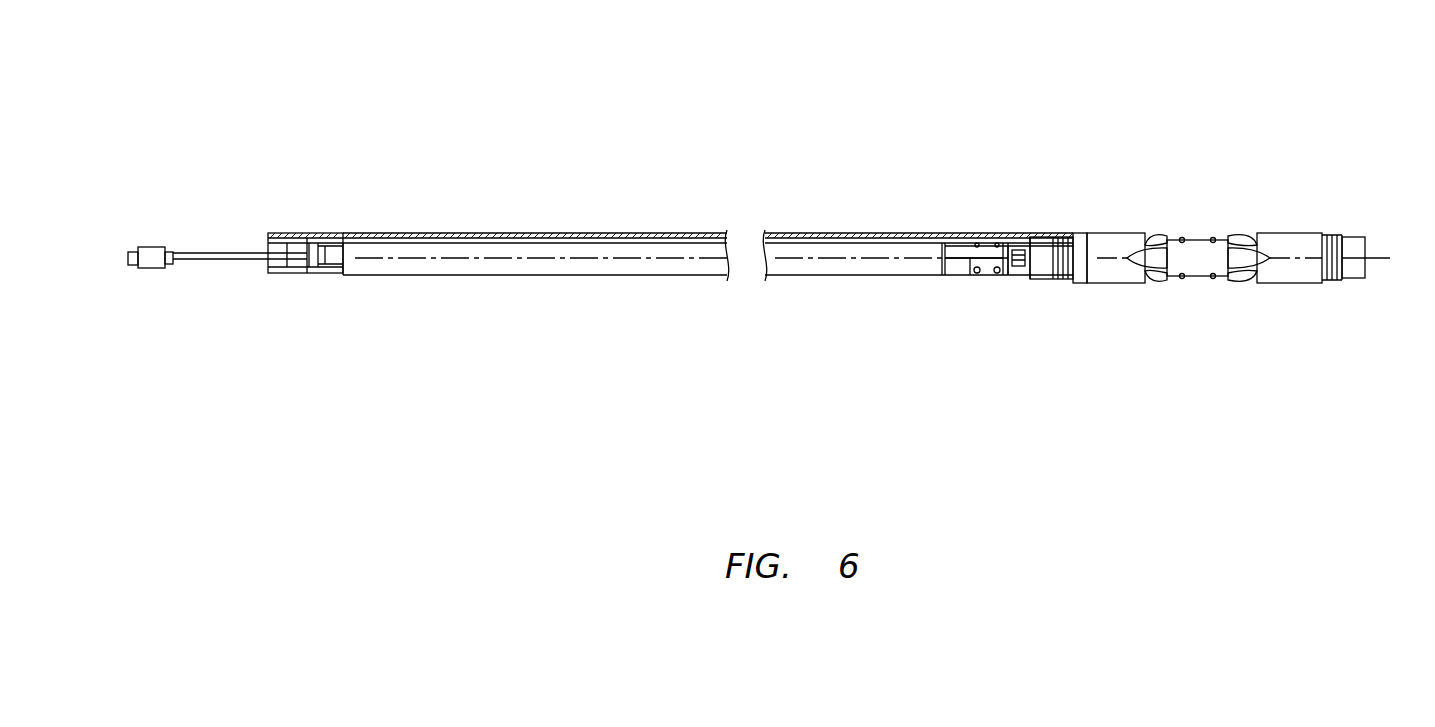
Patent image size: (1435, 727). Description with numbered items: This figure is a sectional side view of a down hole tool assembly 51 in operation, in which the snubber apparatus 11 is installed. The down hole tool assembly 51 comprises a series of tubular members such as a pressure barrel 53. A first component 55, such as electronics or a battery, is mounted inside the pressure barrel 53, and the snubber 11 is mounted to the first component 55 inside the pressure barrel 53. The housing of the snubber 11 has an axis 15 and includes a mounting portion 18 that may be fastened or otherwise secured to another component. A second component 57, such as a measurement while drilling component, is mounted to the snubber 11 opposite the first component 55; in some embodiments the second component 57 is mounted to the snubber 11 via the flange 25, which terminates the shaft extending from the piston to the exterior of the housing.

The down hole tool assembly 51 is at (435, 62).
The first component 55 is at (440, 264).
The pressure barrel 53 is at (867, 238).
The mounting portion 18 is at (955, 250).
The apparatus (snubber) 11 is at (981, 292).
The flange 25 is at (1027, 277).
The second component 57 is at (1123, 240).
The axis 15 is at (1377, 258).